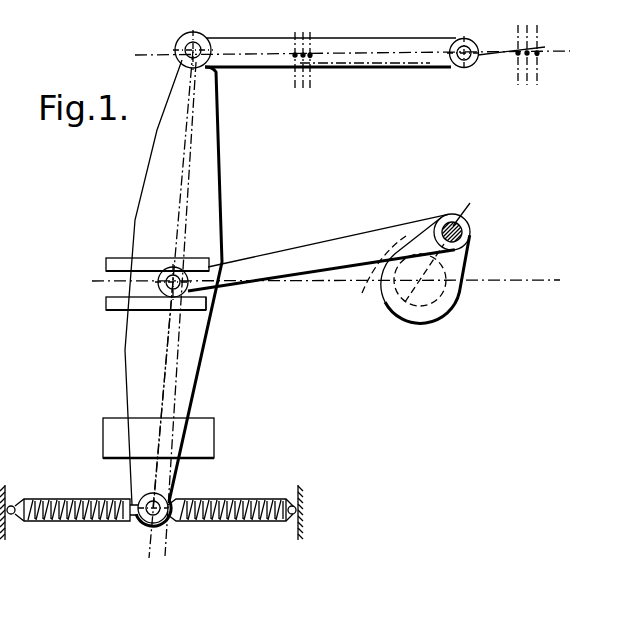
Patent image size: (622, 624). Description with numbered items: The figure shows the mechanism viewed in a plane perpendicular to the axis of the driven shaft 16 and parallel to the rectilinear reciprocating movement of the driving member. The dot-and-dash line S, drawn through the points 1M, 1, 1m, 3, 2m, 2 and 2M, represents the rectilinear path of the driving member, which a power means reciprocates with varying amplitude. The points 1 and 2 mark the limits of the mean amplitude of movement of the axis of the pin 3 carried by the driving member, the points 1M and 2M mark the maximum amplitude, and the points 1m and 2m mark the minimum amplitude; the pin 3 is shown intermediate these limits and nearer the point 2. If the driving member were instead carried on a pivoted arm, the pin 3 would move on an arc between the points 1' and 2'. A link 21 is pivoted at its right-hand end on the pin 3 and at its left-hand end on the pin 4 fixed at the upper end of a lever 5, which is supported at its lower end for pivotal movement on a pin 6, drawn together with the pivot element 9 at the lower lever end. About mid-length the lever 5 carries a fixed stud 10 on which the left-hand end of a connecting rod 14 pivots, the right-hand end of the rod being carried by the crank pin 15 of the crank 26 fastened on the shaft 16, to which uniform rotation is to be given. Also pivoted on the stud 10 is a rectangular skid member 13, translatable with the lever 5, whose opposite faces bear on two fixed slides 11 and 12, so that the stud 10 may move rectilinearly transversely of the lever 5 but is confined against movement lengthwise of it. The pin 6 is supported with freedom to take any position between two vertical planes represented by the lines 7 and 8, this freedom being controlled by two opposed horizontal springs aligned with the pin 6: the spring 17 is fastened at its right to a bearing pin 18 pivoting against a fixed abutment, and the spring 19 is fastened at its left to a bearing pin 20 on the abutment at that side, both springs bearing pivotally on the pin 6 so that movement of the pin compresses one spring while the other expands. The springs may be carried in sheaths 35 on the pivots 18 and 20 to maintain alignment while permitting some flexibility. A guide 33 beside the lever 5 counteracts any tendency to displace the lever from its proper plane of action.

The mean amplitude limit point 1 is at (292, 54).
The mean arcuate movement point 1' is at (309, 47).
The maximum amplitude limit point 1M is at (294, 57).
The minimum amplitude limit point 1m is at (312, 57).
The mean amplitude limit point 2 is at (540, 50).
The mean arcuate movement point 2' is at (535, 45).
The minimum amplitude limit point 2m is at (518, 57).
The maximum amplitude limit point 2M is at (538, 57).
The pin 3 is at (464, 39).
The pin 4 is at (193, 33).
The lever 5 is at (218, 157).
The pivot pin 6 is at (148, 522).
The limit plane line 7 is at (166, 556).
The limit plane line 8 is at (151, 558).
The pivot pin 9 is at (147, 504).
The stud 10 is at (171, 272).
The fixed slide 11 is at (210, 262).
The fixed slide 12 is at (207, 308).
The skid member 13 is at (166, 294).
The connecting rod 14 is at (344, 244).
The crank pin 15 is at (450, 215).
The shaft 16 is at (366, 292).
The spring 17 is at (218, 500).
The bearing pin 18 is at (300, 497).
The spring 19 is at (60, 522).
The bearing pin 20 is at (12, 505).
The link 21 is at (258, 40).
The crank 26 is at (466, 257).
The guide 33 is at (213, 424).
The sheath 35 is at (90, 498).
The line SS S is at (353, 52).